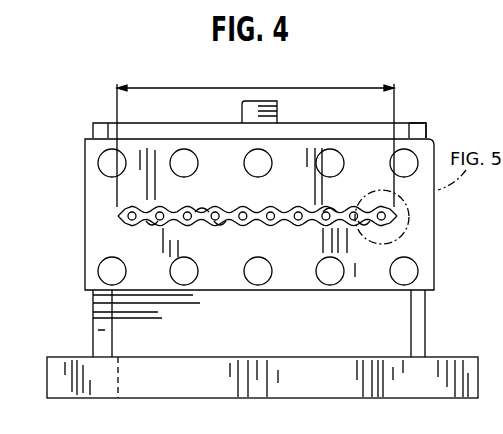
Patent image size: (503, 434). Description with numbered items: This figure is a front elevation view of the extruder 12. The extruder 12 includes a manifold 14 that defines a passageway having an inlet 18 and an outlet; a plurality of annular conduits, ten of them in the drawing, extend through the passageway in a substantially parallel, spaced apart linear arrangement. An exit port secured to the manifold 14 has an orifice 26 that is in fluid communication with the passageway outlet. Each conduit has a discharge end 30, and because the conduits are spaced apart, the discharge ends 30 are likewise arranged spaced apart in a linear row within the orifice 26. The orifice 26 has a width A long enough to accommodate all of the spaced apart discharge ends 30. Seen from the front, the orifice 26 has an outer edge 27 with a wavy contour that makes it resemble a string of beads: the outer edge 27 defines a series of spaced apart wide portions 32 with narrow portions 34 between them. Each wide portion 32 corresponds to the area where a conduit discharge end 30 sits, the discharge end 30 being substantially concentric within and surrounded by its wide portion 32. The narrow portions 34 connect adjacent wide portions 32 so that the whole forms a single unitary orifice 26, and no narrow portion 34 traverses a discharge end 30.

The width A is at (195, 88).
The extruder 12 is at (338, 78).
The manifold 14 is at (403, 123).
The inlet 18 is at (176, 402).
The orifice 26 is at (85, 161).
The outer edge 27 is at (202, 229).
The discharge end 30 is at (137, 207).
The wide portion 32 is at (163, 207).
The narrow portion 34 is at (152, 228).